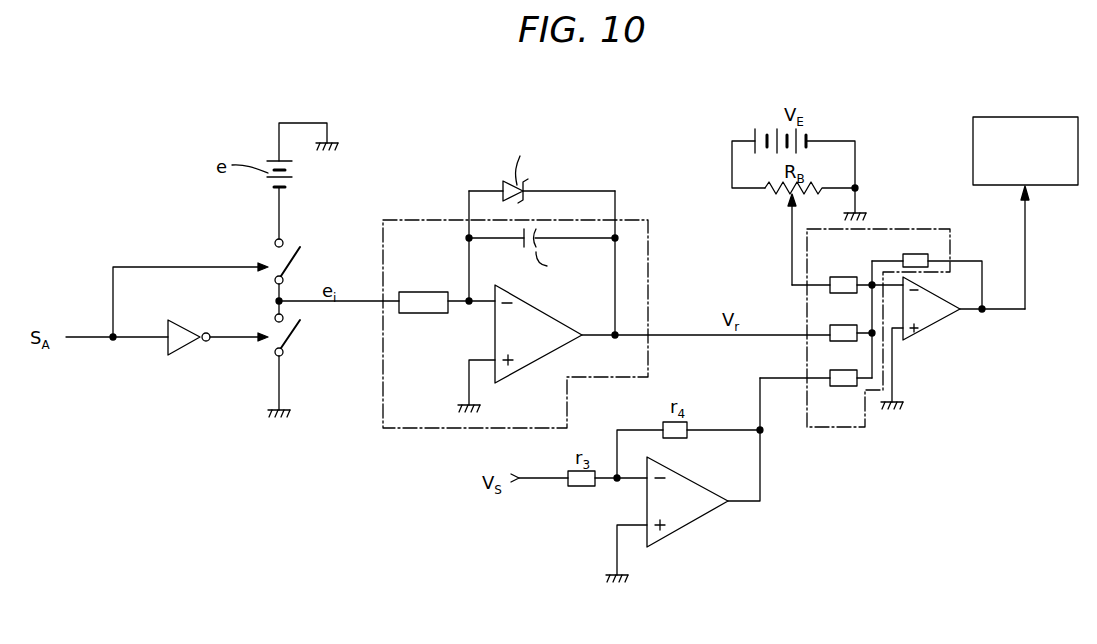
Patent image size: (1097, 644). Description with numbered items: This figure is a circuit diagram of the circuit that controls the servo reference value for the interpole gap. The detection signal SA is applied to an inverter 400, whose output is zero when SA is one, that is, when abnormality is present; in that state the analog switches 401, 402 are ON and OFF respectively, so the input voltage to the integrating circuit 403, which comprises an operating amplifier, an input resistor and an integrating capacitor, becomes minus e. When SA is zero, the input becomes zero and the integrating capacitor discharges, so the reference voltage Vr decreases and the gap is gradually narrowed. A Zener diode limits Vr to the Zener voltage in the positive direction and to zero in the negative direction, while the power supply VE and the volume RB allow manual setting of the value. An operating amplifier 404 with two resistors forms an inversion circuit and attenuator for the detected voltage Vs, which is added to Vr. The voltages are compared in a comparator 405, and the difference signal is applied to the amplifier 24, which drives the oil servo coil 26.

The amplifier 24 is at (945, 320).
The oil servo coil 26 is at (1060, 187).
The inverter 400 is at (186, 347).
The analog switch 401 is at (291, 257).
The analog switch 402 is at (300, 326).
The integrating circuit 403 is at (656, 272).
The operating amplifier 404 is at (710, 512).
The comparator 405 is at (847, 430).